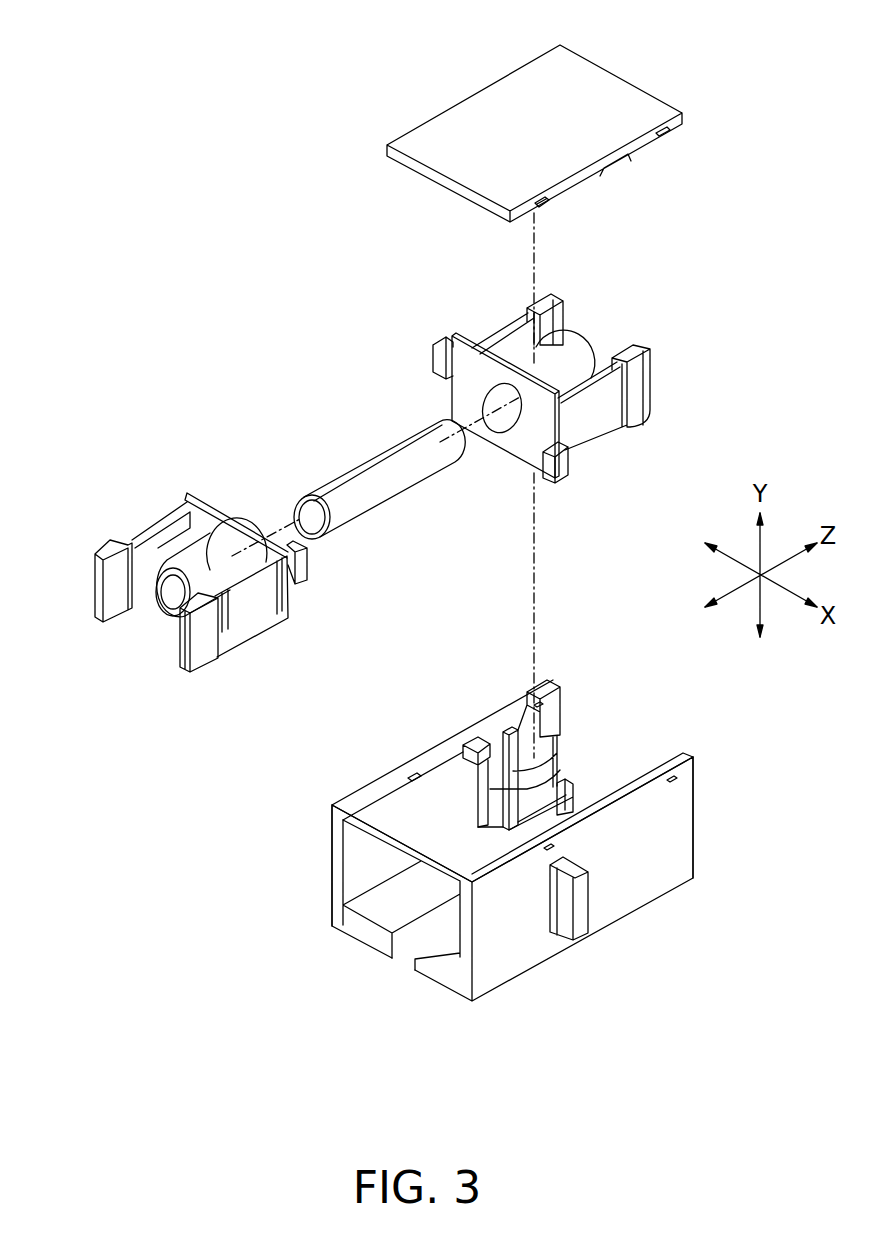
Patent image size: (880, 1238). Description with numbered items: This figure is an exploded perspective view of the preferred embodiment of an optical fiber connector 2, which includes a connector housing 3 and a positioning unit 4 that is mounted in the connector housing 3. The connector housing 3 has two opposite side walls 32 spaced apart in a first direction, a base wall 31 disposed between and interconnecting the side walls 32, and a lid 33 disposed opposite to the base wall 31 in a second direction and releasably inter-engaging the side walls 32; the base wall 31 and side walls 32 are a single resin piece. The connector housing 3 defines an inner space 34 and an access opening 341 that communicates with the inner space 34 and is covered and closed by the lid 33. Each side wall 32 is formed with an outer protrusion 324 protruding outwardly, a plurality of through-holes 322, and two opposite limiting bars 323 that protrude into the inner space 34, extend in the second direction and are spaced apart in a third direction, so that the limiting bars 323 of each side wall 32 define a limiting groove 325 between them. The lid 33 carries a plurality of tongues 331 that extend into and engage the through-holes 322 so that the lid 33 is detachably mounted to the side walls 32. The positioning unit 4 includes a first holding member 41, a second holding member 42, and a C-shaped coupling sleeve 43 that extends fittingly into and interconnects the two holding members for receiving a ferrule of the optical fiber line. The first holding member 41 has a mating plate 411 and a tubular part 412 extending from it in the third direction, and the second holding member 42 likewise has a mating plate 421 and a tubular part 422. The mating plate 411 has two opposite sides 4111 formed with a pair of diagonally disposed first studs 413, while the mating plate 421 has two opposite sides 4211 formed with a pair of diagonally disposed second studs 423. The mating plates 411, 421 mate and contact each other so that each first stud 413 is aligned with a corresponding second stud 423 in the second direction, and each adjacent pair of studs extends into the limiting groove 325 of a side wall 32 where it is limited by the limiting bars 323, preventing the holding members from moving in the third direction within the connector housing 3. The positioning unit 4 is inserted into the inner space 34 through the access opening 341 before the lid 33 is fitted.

The optical fiber connector 2 is at (203, 183).
The connector housing 3 is at (557, 982).
The base wall 31 is at (370, 947).
The side walls 32 is at (332, 888).
The lid 33 is at (482, 88).
The inner space 34 is at (618, 757).
The through-holes 322 is at (410, 774).
The limiting bars 323 is at (553, 780).
The outer protrusion 324 is at (585, 917).
The limiting groove 325 is at (498, 768).
The tongues 331 is at (543, 200).
The access opening 341 is at (467, 733).
The positioning unit 4 is at (197, 357).
The first holding member 41 is at (443, 327).
The mating plate 411 is at (510, 462).
The sides 4111 is at (452, 400).
The tubular part 412 is at (570, 352).
The first studs 413 is at (433, 355).
The second holding member 42 is at (98, 525).
The mating plate 421 is at (289, 606).
The sides 4211 is at (187, 490).
The tubular part 422 is at (178, 550).
The second studs 423 is at (307, 572).
The coupling sleeve 43 is at (352, 465).